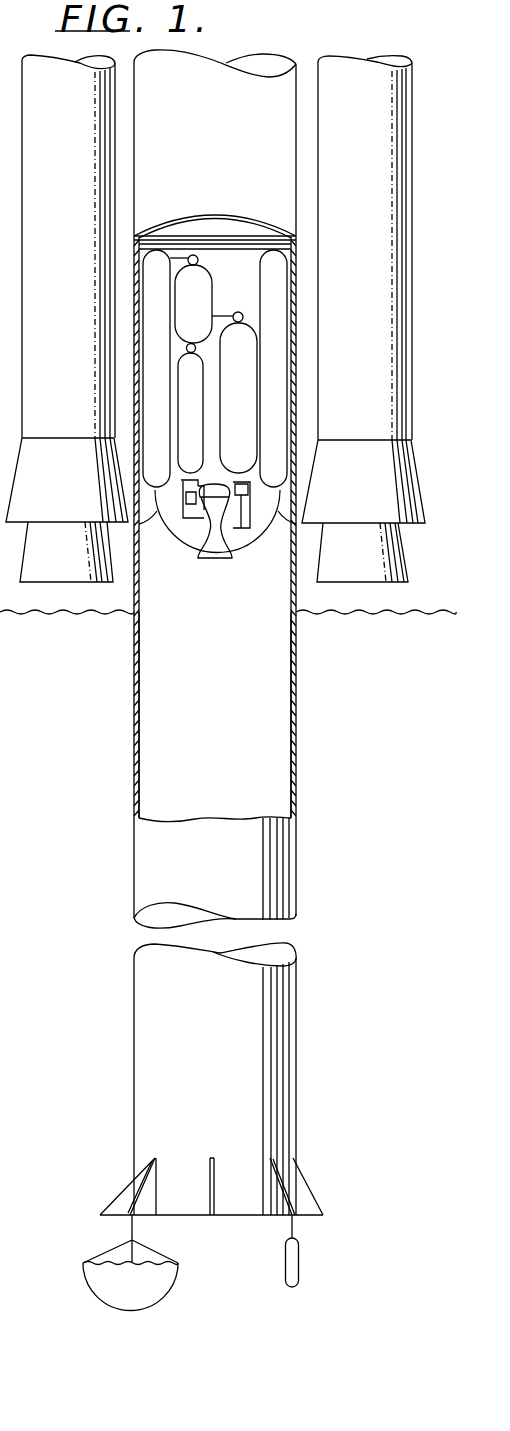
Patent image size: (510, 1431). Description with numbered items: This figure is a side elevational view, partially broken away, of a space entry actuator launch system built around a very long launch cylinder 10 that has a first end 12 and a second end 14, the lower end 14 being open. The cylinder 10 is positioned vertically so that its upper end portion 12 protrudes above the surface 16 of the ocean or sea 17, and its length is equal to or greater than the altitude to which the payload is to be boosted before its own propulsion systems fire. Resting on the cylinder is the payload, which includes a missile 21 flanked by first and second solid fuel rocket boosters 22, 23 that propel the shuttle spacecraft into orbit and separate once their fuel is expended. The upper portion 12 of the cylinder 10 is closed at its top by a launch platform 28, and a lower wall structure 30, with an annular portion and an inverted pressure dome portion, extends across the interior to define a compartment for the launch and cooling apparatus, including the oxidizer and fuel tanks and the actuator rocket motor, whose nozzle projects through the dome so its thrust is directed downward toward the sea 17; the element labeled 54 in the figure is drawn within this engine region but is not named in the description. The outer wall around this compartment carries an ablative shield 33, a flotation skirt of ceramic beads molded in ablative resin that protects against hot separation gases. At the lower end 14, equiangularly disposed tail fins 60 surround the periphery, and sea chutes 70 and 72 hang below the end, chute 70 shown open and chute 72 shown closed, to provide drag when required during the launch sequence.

The launch cylinder 10 is at (297, 852).
The first end 12 is at (176, 221).
The second end 14 is at (172, 1218).
The surface 16 is at (414, 612).
The ocean or sea 17 is at (363, 709).
The missile 21 is at (225, 158).
The first solid fuel rocket booster 22 is at (75, 153).
The second solid fuel rocket booster 23 is at (370, 168).
The launch platform 28 is at (243, 217).
The lower wall structure 30 is at (190, 552).
The ablative shield 33 is at (293, 342).
The rocket engine 54 is at (226, 533).
The tail fins 60 is at (122, 1177).
The sea chute 70 is at (105, 1287).
The sea chute 72 is at (299, 1265).